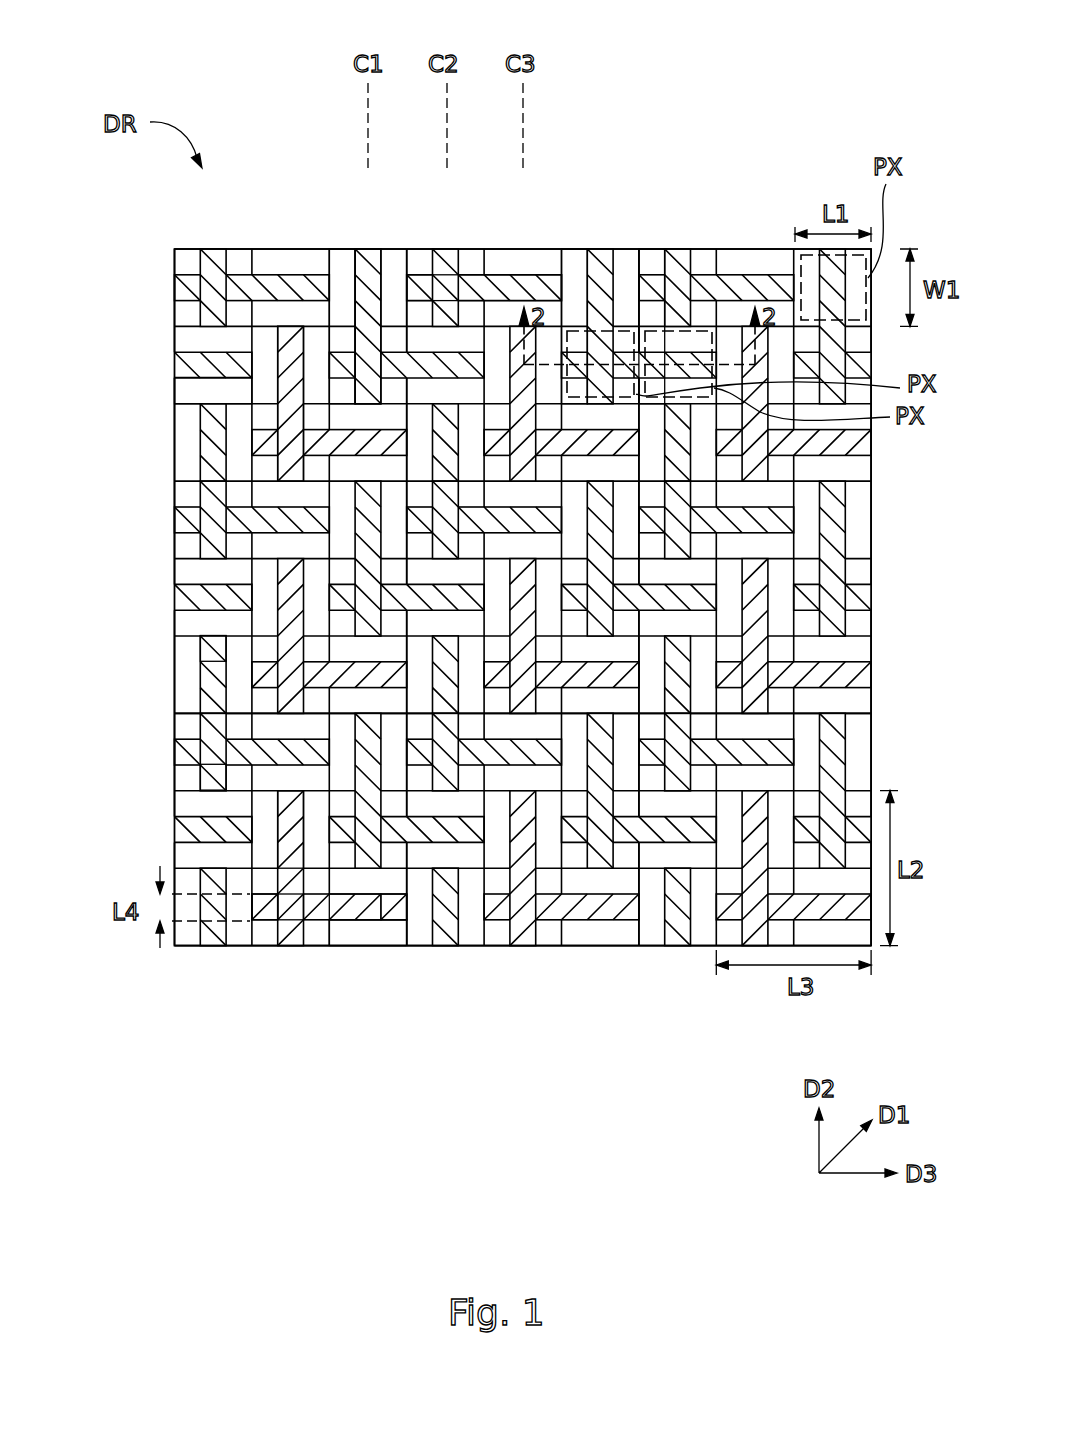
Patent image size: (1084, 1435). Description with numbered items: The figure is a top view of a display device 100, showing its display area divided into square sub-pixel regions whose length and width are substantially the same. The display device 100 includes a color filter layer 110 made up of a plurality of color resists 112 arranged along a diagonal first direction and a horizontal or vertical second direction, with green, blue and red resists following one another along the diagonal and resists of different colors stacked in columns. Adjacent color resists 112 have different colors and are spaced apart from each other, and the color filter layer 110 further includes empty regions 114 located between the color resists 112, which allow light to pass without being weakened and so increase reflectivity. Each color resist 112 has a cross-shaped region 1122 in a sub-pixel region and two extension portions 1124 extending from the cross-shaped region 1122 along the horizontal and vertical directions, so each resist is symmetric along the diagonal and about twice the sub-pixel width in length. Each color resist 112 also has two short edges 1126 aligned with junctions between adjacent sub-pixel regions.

The display device 100 is at (457, 563).
The color filter layer 110 is at (535, 1076).
The color resist 112 is at (291, 341).
The empty region 114 is at (341, 249).
The cross-shaped region 1122 is at (289, 914).
The extension portion 1124 is at (284, 834).
The short edge 1126 is at (200, 629).